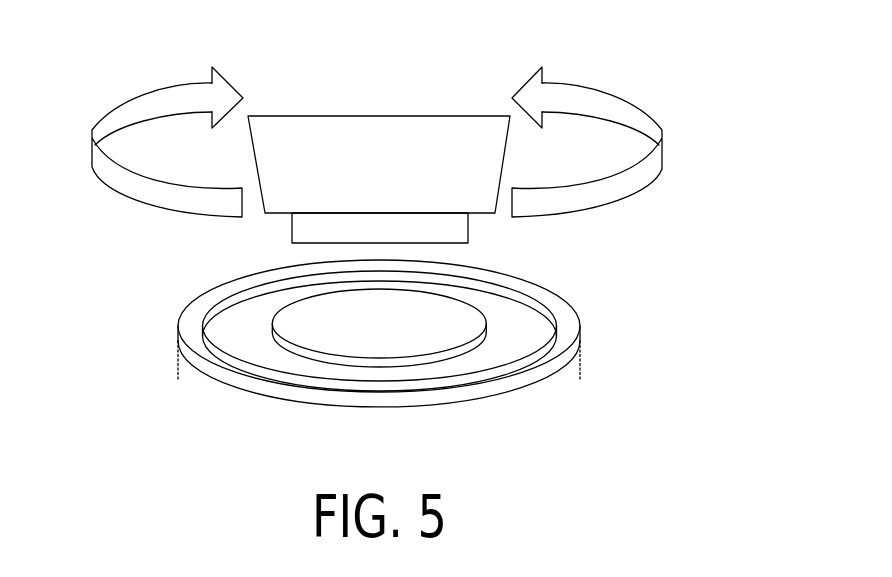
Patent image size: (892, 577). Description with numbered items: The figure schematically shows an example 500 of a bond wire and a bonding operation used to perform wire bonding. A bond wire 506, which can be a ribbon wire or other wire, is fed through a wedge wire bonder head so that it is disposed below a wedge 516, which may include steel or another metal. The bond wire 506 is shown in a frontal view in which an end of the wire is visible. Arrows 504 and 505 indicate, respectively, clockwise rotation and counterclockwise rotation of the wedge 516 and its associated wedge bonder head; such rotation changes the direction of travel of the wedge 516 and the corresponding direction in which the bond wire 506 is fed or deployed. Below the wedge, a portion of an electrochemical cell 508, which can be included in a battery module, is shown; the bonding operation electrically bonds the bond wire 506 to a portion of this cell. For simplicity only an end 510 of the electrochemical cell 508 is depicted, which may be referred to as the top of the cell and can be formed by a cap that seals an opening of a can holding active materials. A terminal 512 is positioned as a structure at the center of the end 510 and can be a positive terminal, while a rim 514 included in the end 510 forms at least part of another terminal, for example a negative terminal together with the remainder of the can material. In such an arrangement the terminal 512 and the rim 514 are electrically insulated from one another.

The example of a bond wire and a bonding operation 500 is at (759, 80).
The arrow 504 is at (103, 183).
The arrow 505 is at (623, 203).
The wedge 516 is at (489, 151).
The bond wire 506 is at (451, 240).
The end 510 is at (338, 323).
The electrochemical cell 508 is at (178, 367).
The rim 514 is at (233, 280).
The terminal 512 is at (398, 351).